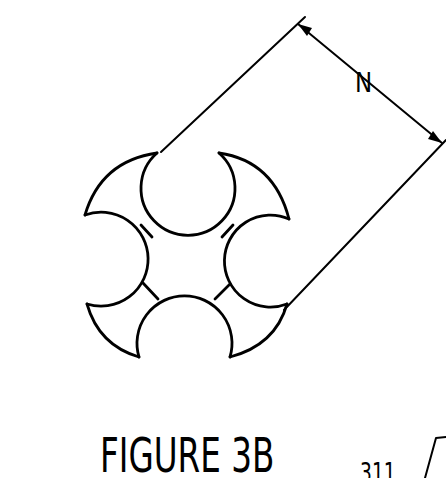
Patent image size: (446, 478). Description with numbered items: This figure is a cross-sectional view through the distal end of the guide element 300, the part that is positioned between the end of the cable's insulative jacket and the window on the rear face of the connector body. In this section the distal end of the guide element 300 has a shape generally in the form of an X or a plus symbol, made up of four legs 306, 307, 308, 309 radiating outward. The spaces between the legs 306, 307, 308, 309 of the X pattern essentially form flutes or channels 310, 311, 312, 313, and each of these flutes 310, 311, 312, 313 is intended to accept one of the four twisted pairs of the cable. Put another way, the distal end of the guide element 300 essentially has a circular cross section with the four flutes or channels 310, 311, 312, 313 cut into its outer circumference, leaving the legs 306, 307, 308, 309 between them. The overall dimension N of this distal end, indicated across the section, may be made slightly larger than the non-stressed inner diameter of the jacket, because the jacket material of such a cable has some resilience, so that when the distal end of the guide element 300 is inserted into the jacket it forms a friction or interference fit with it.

The guide element 300 is at (183, 247).
The leg 306 is at (267, 340).
The leg 307 is at (107, 337).
The leg 308 is at (108, 183).
The leg 309 is at (270, 187).
The flute 310 is at (177, 225).
The flute 311 is at (107, 263).
The flute 312 is at (173, 333).
The flute 313 is at (255, 270).